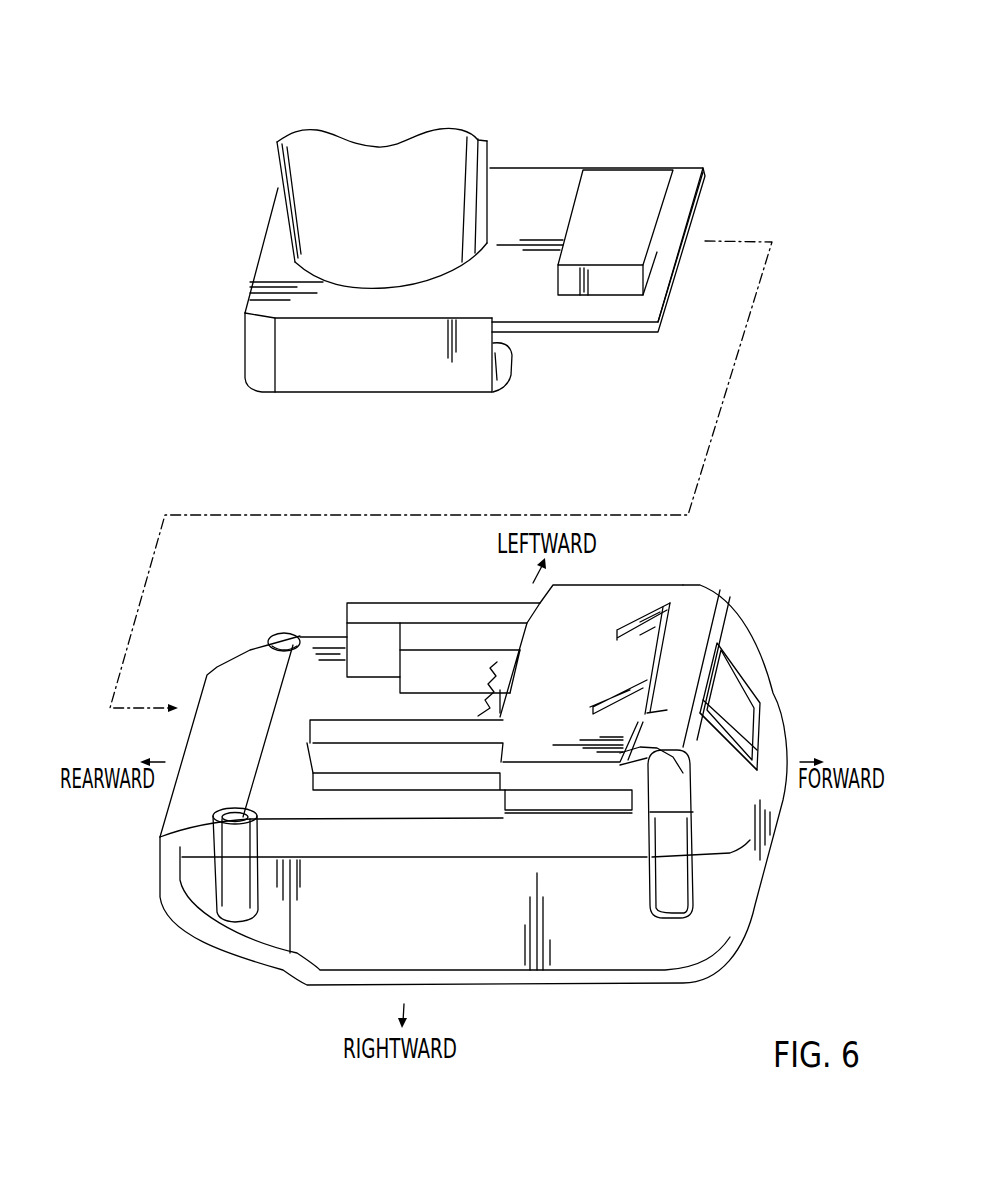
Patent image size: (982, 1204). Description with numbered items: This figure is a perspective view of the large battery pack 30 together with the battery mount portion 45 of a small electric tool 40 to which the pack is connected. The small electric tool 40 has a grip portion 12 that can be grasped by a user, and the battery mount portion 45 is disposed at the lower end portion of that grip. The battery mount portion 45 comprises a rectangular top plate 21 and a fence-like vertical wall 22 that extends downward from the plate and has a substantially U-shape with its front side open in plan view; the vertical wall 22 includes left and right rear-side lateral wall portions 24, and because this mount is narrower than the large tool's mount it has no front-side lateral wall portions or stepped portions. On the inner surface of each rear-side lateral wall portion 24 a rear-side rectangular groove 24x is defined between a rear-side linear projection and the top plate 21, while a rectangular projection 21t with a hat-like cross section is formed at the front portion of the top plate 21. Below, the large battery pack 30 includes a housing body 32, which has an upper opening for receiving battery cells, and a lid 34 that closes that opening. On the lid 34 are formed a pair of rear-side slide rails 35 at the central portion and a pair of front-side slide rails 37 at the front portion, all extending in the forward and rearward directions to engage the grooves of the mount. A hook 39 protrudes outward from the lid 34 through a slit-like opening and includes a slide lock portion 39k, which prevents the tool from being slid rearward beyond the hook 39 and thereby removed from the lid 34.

The small electric tool 40 is at (441, 357).
The grip portion 12 is at (365, 197).
The vertical wall 22 is at (477, 265).
The rear-side lateral wall portion 24 is at (493, 190).
The rear-side rectangular groove 24x is at (502, 382).
The top plate 21 is at (543, 223).
The rectangular projection 21t is at (620, 217).
The battery mount portion 45 is at (521, 206).
The large battery pack 30 is at (495, 757).
The housing body 32 is at (757, 812).
The lid 34 is at (743, 637).
The rear-side slide rail 35 is at (429, 603).
The front-side slide rail 37 is at (625, 578).
The hook 39 is at (664, 655).
The slide lock portion 39k is at (663, 655).